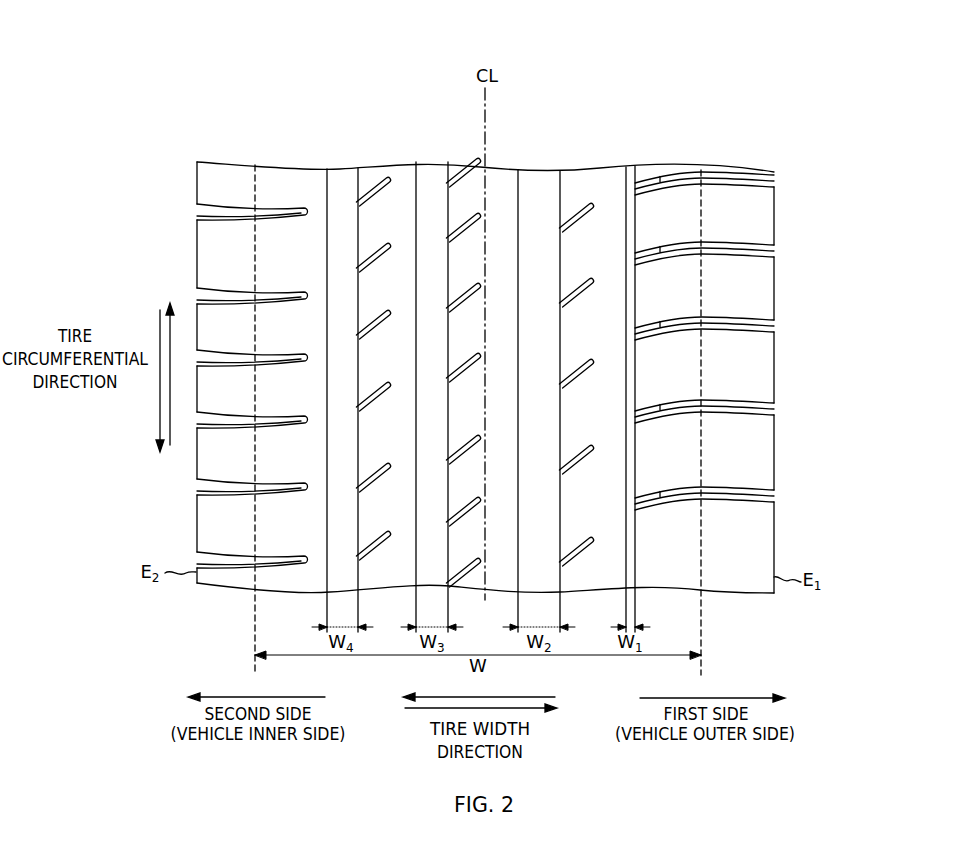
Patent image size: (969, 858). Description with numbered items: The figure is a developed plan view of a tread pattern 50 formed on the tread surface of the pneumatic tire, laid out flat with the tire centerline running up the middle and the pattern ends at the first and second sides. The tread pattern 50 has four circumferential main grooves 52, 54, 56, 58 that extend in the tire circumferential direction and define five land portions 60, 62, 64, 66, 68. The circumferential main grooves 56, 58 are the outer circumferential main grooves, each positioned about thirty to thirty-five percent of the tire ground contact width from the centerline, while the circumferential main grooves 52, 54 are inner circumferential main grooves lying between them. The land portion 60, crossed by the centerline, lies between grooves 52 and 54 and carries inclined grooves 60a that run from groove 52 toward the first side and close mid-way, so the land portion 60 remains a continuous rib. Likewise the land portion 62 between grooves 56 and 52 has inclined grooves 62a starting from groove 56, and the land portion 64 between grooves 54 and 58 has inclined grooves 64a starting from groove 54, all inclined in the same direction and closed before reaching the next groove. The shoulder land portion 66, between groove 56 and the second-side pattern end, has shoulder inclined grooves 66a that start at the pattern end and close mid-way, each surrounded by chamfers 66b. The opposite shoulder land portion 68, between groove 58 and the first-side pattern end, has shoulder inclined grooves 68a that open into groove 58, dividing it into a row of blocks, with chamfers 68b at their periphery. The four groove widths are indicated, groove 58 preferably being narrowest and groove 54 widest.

The tread pattern 50 is at (717, 78).
The circumferential main groove 52 is at (430, 200).
The circumferential main groove 54 is at (537, 190).
The circumferential main groove 56 is at (341, 190).
The circumferential main groove 58 is at (631, 190).
The land portion 60 is at (480, 348).
The inclined groove 60a is at (467, 218).
The land portion 62 is at (387, 333).
The inclined groove 62a is at (376, 190).
The land portion 64 is at (582, 336).
The inclined groove 64a is at (578, 209).
The land portion 66 is at (252, 345).
The shoulder inclined groove 66a is at (285, 213).
The chamfer 66b is at (229, 212).
The land portion 68 is at (723, 350).
The shoulder inclined groove 68a is at (686, 178).
The chamfer 68b is at (742, 408).